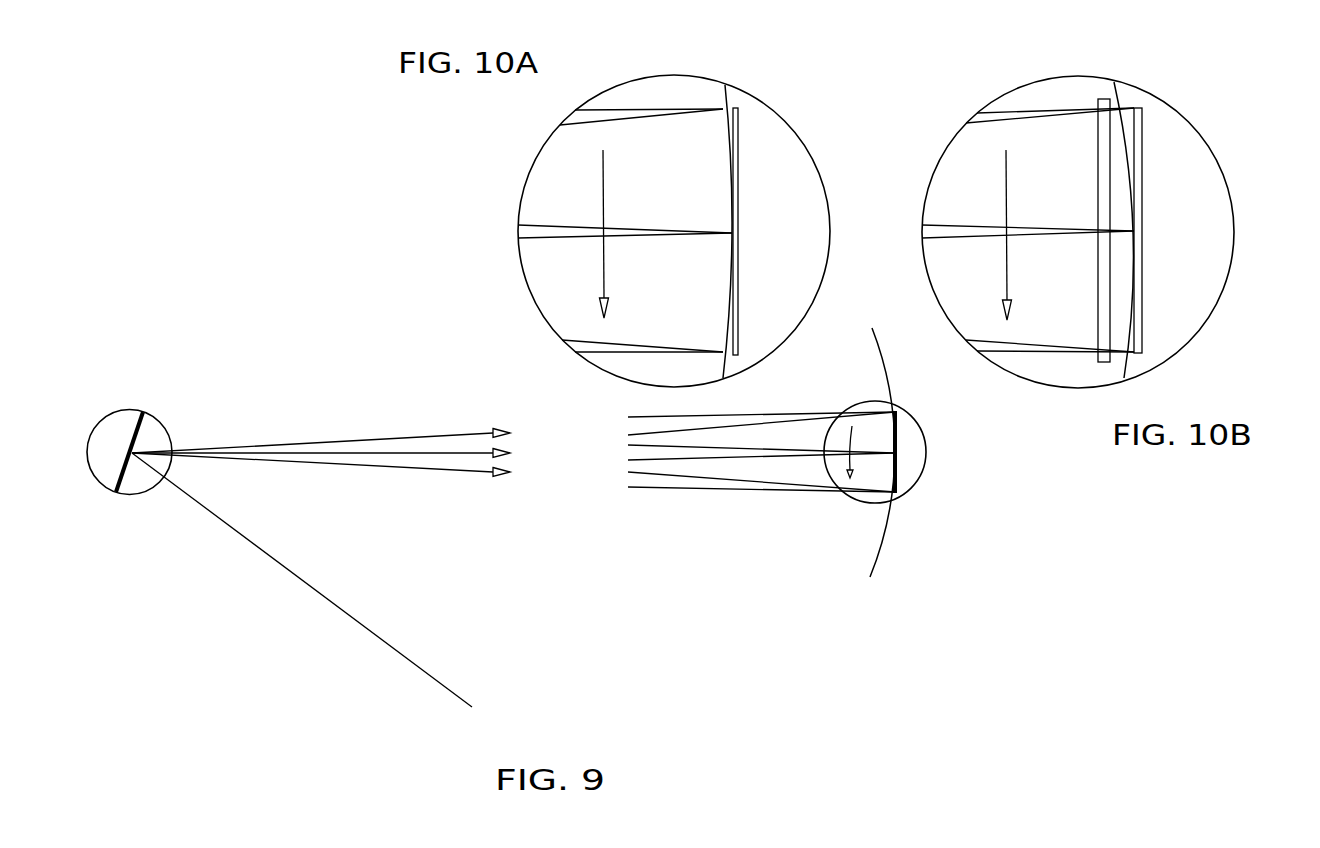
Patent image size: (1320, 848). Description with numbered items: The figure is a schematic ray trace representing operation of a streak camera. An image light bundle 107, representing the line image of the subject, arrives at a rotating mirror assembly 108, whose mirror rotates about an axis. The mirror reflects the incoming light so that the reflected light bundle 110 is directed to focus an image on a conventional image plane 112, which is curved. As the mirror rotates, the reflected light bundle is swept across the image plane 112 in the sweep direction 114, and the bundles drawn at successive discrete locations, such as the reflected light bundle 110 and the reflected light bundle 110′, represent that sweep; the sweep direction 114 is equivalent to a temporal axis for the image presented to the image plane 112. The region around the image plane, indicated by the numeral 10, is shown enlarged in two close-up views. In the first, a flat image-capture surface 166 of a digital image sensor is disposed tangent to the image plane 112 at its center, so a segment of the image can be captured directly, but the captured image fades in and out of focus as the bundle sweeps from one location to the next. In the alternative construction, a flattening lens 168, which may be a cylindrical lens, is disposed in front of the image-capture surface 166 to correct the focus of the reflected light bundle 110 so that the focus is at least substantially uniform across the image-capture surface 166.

In FIG. 9, the area of close-up view 10 is at (926, 436).
In FIG. 9, the image light bundle 107 is at (357, 620).
In FIG. 9, the rotating mirror assembly 108 is at (155, 387).
In FIG. 9, the reflected light bundle 110 is at (450, 432).
In FIG. 10A, the reflected light bundle 110 is at (622, 120).
In FIG. 10B, the reflected light bundle 110 is at (1017, 118).
In FIG. 9, the reflected light bundle 110′ is at (418, 452).
In FIG. 10A, the reflected light bundle 110′ is at (638, 228).
In FIG. 10B, the reflected light bundle 110′ is at (950, 225).
In FIG. 9, the conventional image plane 112 is at (883, 547).
In FIG. 10A, the conventional image plane 112 is at (723, 90).
In FIG. 10B, the conventional image plane 112 is at (1120, 87).
In FIG. 9, the sweep direction 114 is at (855, 440).
In FIG. 10A, the sweep direction 114 is at (607, 270).
In FIG. 10B, the sweep direction 114 is at (1010, 205).
In FIG. 10A, the image-capture surface 166 is at (740, 198).
In FIG. 10B, the image-capture surface 166 is at (1138, 172).
In FIG. 10B, the flattening lens 168 is at (1098, 175).